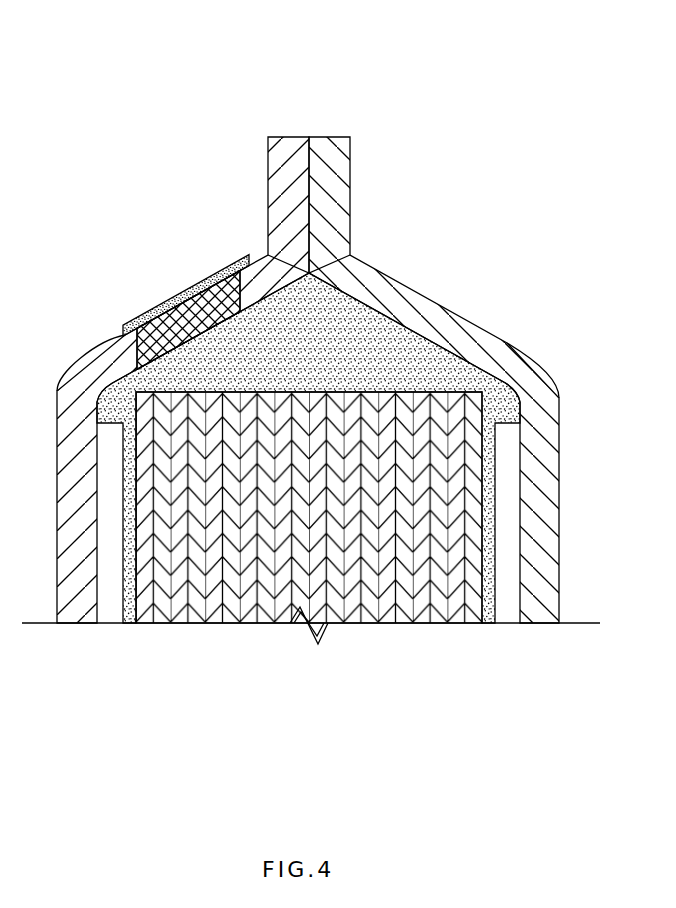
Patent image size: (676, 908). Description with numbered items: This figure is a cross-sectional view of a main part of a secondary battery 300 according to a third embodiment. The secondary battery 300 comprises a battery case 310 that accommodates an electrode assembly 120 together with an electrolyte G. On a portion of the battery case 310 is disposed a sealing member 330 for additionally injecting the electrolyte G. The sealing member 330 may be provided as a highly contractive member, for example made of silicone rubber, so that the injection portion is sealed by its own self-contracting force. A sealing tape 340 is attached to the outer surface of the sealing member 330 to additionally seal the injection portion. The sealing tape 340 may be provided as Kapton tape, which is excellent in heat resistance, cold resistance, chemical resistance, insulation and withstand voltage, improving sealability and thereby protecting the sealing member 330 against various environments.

The secondary battery 300 is at (572, 54).
The battery case 310 is at (472, 313).
The sealing member 330 is at (192, 315).
The sealing tape 340 is at (127, 326).
The electrolyte G is at (372, 333).
The electrode assembly 120 is at (237, 638).